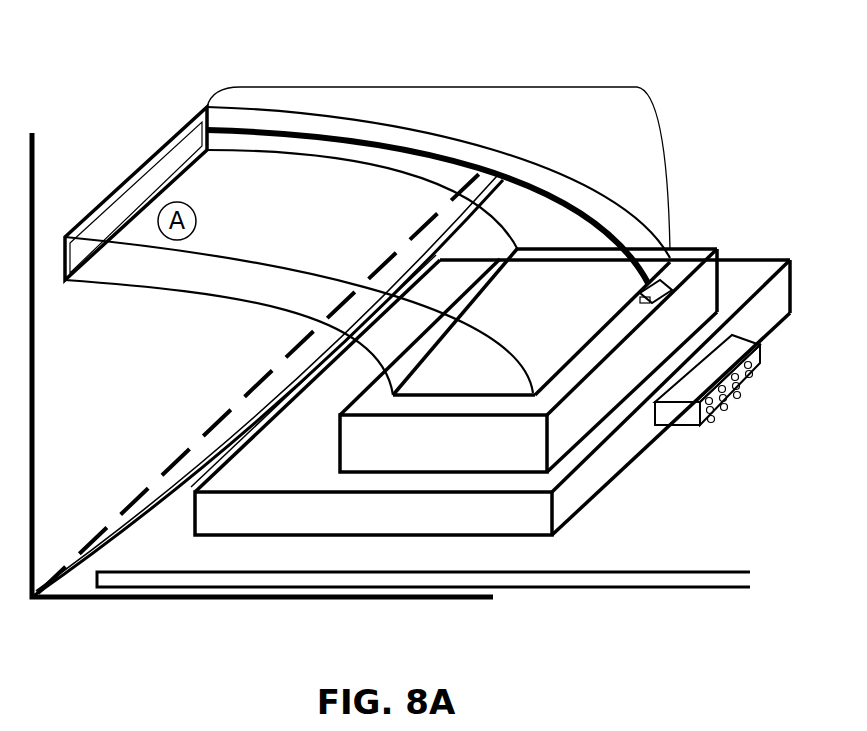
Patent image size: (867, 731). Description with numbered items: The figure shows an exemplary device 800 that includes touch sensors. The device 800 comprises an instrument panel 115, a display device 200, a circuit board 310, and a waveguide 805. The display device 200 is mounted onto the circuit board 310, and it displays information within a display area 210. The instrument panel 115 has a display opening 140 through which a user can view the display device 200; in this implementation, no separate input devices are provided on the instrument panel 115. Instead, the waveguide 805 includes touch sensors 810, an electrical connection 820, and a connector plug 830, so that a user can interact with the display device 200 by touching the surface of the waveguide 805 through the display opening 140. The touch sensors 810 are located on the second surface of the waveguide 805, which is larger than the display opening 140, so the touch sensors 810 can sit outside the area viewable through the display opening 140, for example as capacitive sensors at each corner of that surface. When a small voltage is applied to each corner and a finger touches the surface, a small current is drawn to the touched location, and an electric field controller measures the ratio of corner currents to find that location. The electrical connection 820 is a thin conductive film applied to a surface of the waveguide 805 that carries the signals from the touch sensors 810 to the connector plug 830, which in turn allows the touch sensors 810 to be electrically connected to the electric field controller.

The device 800 is at (124, 28).
The display opening 140 is at (128, 167).
The touch sensors 810 is at (207, 92).
The waveguide 805 is at (375, 87).
The electrical connection 820 is at (545, 179).
The connector plug 830 is at (657, 288).
The display area 210 is at (590, 356).
The display device 200 is at (233, 548).
The circuit board 310 is at (283, 598).
The instrument panel 115 is at (50, 405).